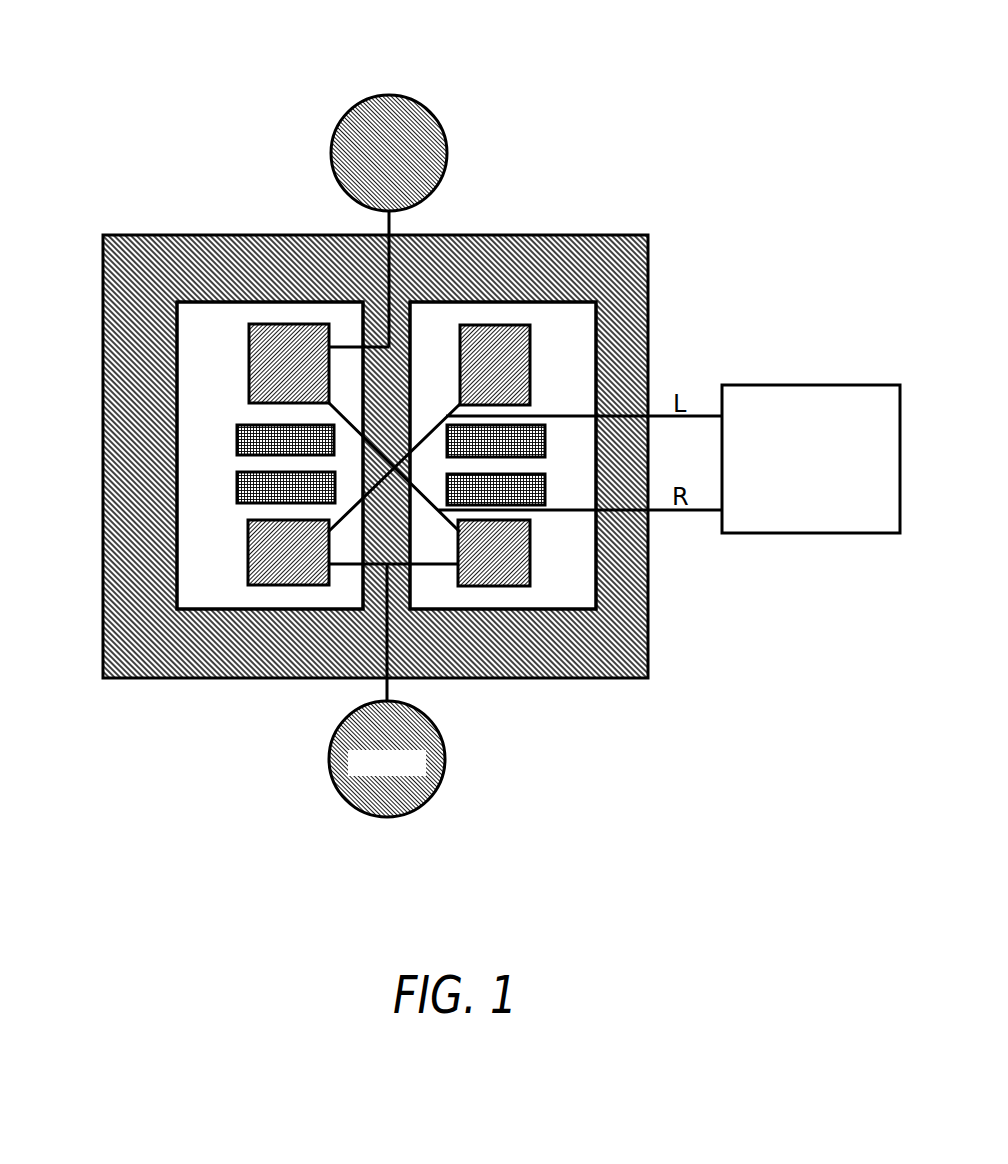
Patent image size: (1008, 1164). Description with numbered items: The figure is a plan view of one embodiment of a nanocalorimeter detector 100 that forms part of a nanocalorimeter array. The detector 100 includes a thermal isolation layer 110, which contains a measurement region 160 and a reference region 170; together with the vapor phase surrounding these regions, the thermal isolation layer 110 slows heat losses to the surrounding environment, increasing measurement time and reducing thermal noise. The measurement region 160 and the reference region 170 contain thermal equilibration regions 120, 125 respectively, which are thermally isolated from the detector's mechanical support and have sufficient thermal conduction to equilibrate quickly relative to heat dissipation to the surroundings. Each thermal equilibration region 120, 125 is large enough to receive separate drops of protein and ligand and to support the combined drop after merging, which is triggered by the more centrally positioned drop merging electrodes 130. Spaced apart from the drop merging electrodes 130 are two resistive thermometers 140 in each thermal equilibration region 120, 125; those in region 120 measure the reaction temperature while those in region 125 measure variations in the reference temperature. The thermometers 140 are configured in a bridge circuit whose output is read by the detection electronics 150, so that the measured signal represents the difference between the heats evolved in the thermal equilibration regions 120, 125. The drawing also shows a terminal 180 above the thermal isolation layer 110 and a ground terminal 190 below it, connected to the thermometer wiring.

The detector 100 is at (641, 92).
The thermal isolation layer 110 is at (120, 570).
The thermal equilibration region 120 is at (207, 487).
The thermal equilibration region 125 is at (565, 349).
The drop merging electrodes 130 is at (237, 432).
The resistive thermometers 140 is at (530, 558).
The detection electronics 150 is at (802, 382).
The measurement region 160 is at (247, 235).
The reference region 170 is at (517, 235).
The input terminal 180 is at (430, 112).
The ground terminal 190 is at (410, 813).